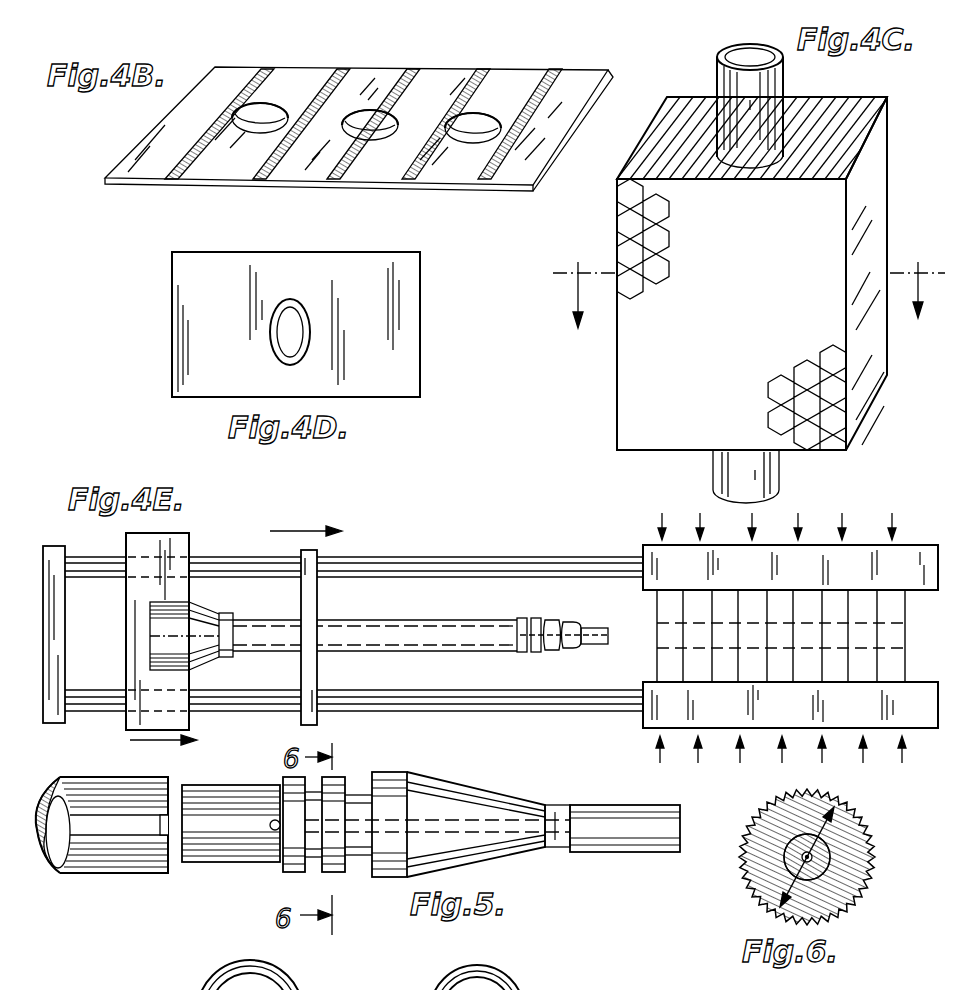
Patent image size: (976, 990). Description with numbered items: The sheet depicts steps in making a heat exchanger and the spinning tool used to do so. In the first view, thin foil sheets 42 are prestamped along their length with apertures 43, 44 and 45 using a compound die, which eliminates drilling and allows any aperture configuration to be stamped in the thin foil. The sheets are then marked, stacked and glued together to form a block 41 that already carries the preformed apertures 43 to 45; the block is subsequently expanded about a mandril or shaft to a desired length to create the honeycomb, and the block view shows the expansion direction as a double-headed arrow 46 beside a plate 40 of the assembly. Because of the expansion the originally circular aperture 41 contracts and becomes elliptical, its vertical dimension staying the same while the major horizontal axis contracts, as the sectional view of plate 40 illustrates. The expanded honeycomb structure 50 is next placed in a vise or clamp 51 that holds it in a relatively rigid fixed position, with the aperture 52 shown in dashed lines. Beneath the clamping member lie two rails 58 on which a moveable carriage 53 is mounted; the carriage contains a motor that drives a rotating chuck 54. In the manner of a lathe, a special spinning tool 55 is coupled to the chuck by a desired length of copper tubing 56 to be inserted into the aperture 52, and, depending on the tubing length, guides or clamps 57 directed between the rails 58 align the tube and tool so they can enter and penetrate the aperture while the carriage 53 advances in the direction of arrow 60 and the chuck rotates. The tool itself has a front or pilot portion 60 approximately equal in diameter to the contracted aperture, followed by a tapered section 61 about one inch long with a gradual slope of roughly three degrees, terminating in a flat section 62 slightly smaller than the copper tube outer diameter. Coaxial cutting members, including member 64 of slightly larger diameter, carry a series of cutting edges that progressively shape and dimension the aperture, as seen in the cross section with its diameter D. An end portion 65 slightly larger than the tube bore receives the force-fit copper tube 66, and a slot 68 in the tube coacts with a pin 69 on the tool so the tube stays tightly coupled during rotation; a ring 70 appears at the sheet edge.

In FIG. 4D, the plate 40 is at (420, 342).
In FIG. 4D, the block 41 is at (297, 306).
In FIG. 4C, the block 41 is at (723, 157).
In FIG. 4B, the foil sheets 42 is at (452, 70).
In FIG. 4B, the aperture 43 is at (260, 118).
In FIG. 4B, the aperture 44 is at (370, 125).
In FIG. 4B, the aperture 45 is at (473, 128).
In FIG. 4C, the block movement direction 46 is at (908, 140).
In FIG. 4E, the expanded honeycomb structure 50 is at (893, 669).
In FIG. 4E, the vise or clamp 51 is at (907, 547).
In FIG. 4E, the aperture 52 is at (862, 622).
In FIG. 4E, the moveable carriage 53 is at (135, 614).
In FIG. 4E, the rotating chuck 54 is at (217, 652).
In FIG. 4E, the spinning tool 55 is at (543, 652).
In FIG. 4E, the copper tubing 56 is at (449, 652).
In FIG. 4E, the guides or clamps 57 is at (318, 662).
In FIG. 4E, the rails 58 is at (448, 560).
In FIG. 4E, the front or pilot portion 60 is at (299, 526).
In FIG. 5, the front or pilot portion 60 is at (613, 802).
In FIG. 5, the tapered section 61 is at (517, 792).
In FIG. 5, the flat section 62 is at (400, 772).
In FIG. 5, the cutting member 64 is at (286, 860).
In FIG. 5, the end portion 65 is at (217, 842).
In FIG. 5, the copper tube 66 is at (102, 858).
In FIG. 5, the slot 68 is at (158, 820).
In FIG. 5, the pin 69 is at (273, 816).
In FIG. 5, the ring 70 is at (432, 986).
In FIG. 6, the diameter D is at (778, 883).